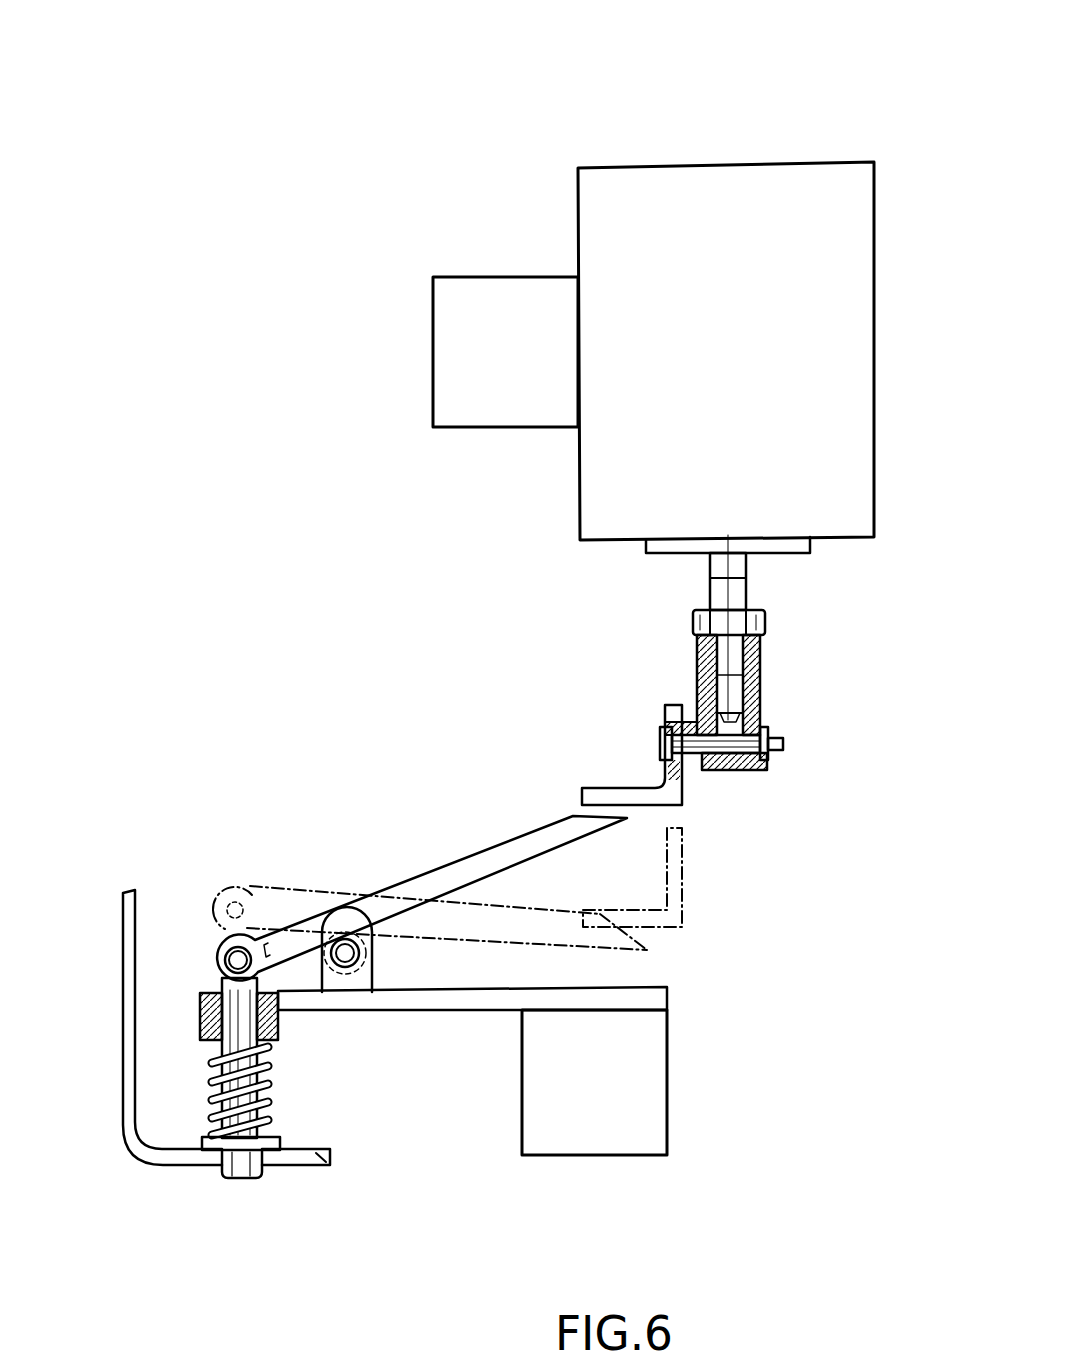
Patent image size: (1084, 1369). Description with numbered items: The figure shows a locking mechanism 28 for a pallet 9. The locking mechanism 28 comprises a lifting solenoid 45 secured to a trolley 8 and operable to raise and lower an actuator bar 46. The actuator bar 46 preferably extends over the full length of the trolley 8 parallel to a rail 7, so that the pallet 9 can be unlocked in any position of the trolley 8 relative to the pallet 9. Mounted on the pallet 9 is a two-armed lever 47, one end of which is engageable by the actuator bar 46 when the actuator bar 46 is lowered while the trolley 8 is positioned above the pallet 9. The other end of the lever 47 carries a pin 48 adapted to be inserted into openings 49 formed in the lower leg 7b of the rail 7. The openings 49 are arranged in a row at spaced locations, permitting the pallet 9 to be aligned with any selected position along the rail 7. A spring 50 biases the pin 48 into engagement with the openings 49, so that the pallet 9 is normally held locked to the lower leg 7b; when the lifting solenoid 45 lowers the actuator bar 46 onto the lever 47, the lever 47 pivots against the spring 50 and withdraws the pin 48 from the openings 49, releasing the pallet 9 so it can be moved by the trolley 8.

The locking mechanism 28 is at (656, 388).
The lifting solenoid 45 is at (643, 225).
The trolley 8 is at (491, 305).
The actuator bar 46 is at (672, 790).
The two-armed lever 47 is at (424, 882).
The pallet 9 is at (638, 1080).
The rail 7 is at (150, 912).
The lower leg of rail 7b is at (328, 1160).
The pin 48 is at (237, 1180).
The openings 49 is at (275, 1163).
The spring 50 is at (280, 1083).